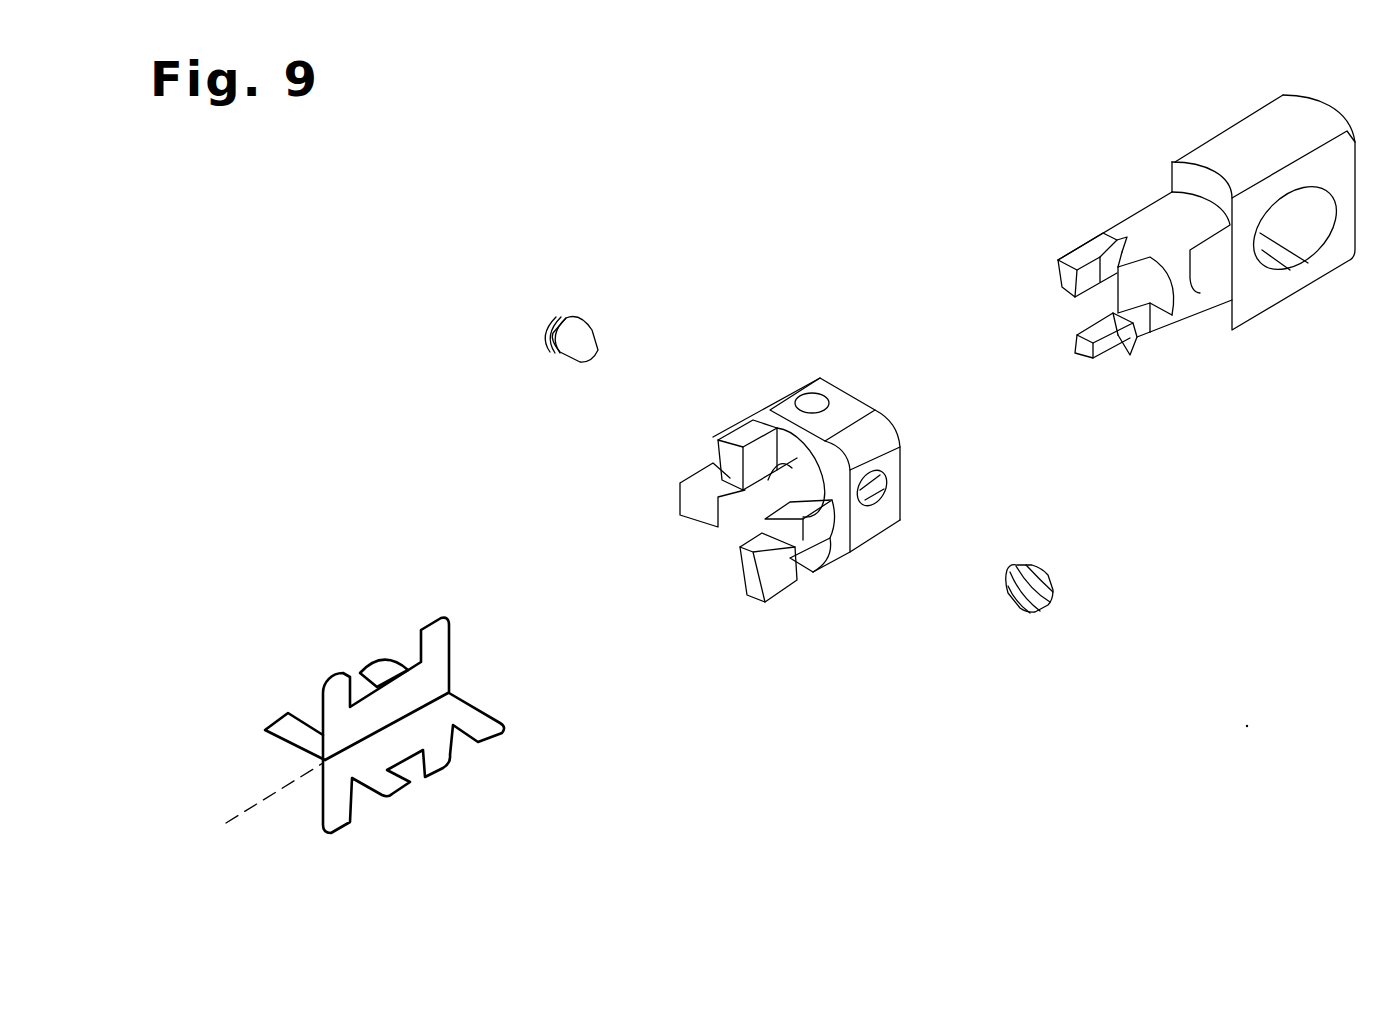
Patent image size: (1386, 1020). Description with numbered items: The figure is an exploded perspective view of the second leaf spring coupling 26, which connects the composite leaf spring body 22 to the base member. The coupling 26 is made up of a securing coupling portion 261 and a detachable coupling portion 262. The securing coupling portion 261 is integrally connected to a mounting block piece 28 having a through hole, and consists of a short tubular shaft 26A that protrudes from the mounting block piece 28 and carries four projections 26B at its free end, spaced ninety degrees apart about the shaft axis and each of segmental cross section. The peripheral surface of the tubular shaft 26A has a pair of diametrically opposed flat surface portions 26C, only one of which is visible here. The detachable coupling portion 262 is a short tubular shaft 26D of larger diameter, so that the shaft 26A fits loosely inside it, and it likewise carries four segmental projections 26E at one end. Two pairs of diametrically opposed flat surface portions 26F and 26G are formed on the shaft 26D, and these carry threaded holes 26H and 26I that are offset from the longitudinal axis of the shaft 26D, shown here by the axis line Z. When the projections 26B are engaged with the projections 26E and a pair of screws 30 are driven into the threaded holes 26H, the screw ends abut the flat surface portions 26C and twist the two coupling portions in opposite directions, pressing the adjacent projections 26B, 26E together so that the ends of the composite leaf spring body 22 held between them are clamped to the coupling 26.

The composite leaf spring body 22 is at (365, 704).
The second leaf spring coupling 26 is at (790, 440).
The securing coupling portion 261 is at (1136, 265).
The detachable coupling portion 262 is at (790, 471).
The tubular shaft 26A is at (1188, 293).
The projections 26B is at (1100, 238).
The flat surface portions 26C is at (1212, 277).
The tubular shaft 26D is at (878, 442).
The projections 26E is at (733, 458).
The flat surface portions 26F is at (921, 519).
The flat surface portions 26G is at (841, 372).
The threaded holes 26H is at (881, 510).
The threaded holes 26I is at (806, 380).
The mounting block piece 28 is at (1266, 198).
The screws 30 is at (553, 328).
The axis Z is at (269, 797).